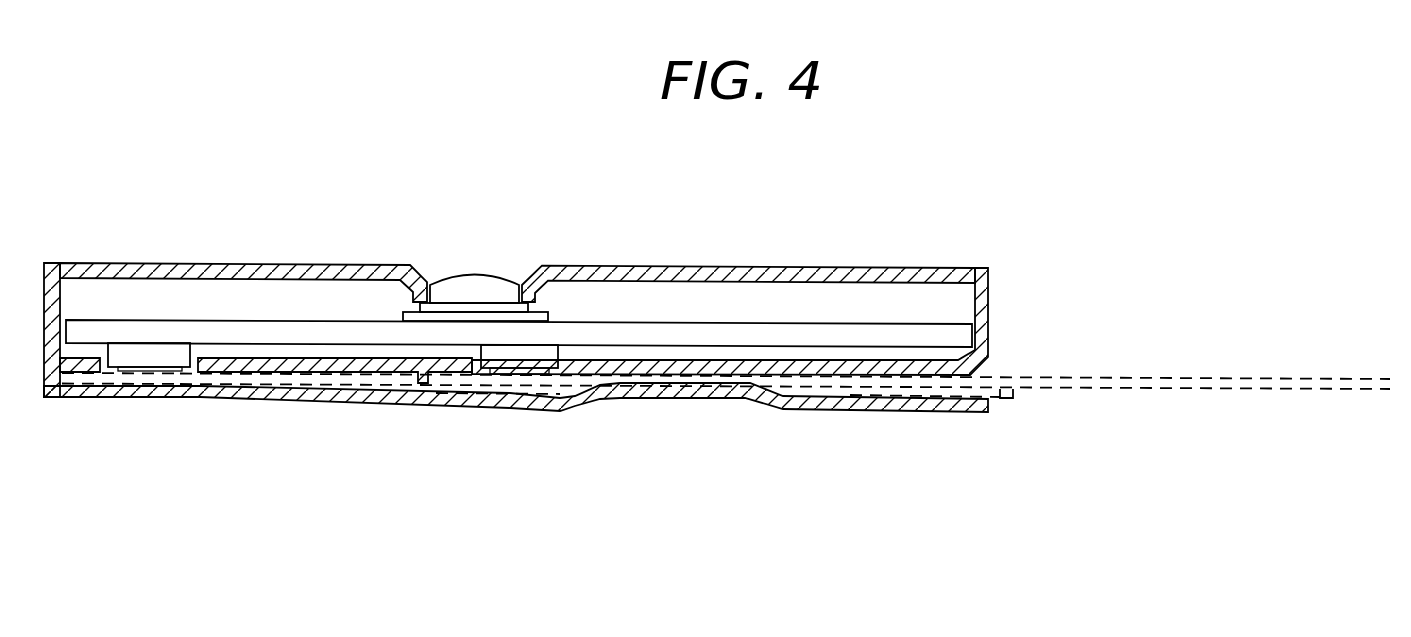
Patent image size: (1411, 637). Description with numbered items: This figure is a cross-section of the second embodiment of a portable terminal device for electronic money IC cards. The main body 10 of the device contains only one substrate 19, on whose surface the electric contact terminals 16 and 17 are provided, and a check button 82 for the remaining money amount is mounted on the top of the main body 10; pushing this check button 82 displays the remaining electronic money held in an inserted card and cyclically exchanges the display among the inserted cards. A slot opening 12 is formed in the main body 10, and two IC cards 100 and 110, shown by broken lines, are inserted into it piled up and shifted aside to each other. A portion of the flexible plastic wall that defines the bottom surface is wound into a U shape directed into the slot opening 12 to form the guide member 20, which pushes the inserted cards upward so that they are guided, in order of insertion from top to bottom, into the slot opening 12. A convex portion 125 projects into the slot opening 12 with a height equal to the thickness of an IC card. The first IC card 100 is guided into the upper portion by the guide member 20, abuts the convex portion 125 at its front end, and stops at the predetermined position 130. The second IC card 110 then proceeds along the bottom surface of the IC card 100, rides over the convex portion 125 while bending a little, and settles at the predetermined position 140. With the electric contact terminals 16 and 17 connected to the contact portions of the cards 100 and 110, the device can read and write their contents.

The main body 10 is at (216, 263).
The slot opening 12 is at (992, 352).
The electric contact terminal 16 is at (517, 376).
The electric contact terminal 17 is at (158, 369).
The substrate 19 is at (578, 330).
The guide member 20 is at (768, 398).
The check button 82 is at (476, 288).
The IC card 100 is at (1248, 378).
The IC card 110 is at (1003, 400).
The convex portion 125 is at (424, 380).
The predetermined position 130 is at (443, 389).
The predetermined position 140 is at (80, 378).